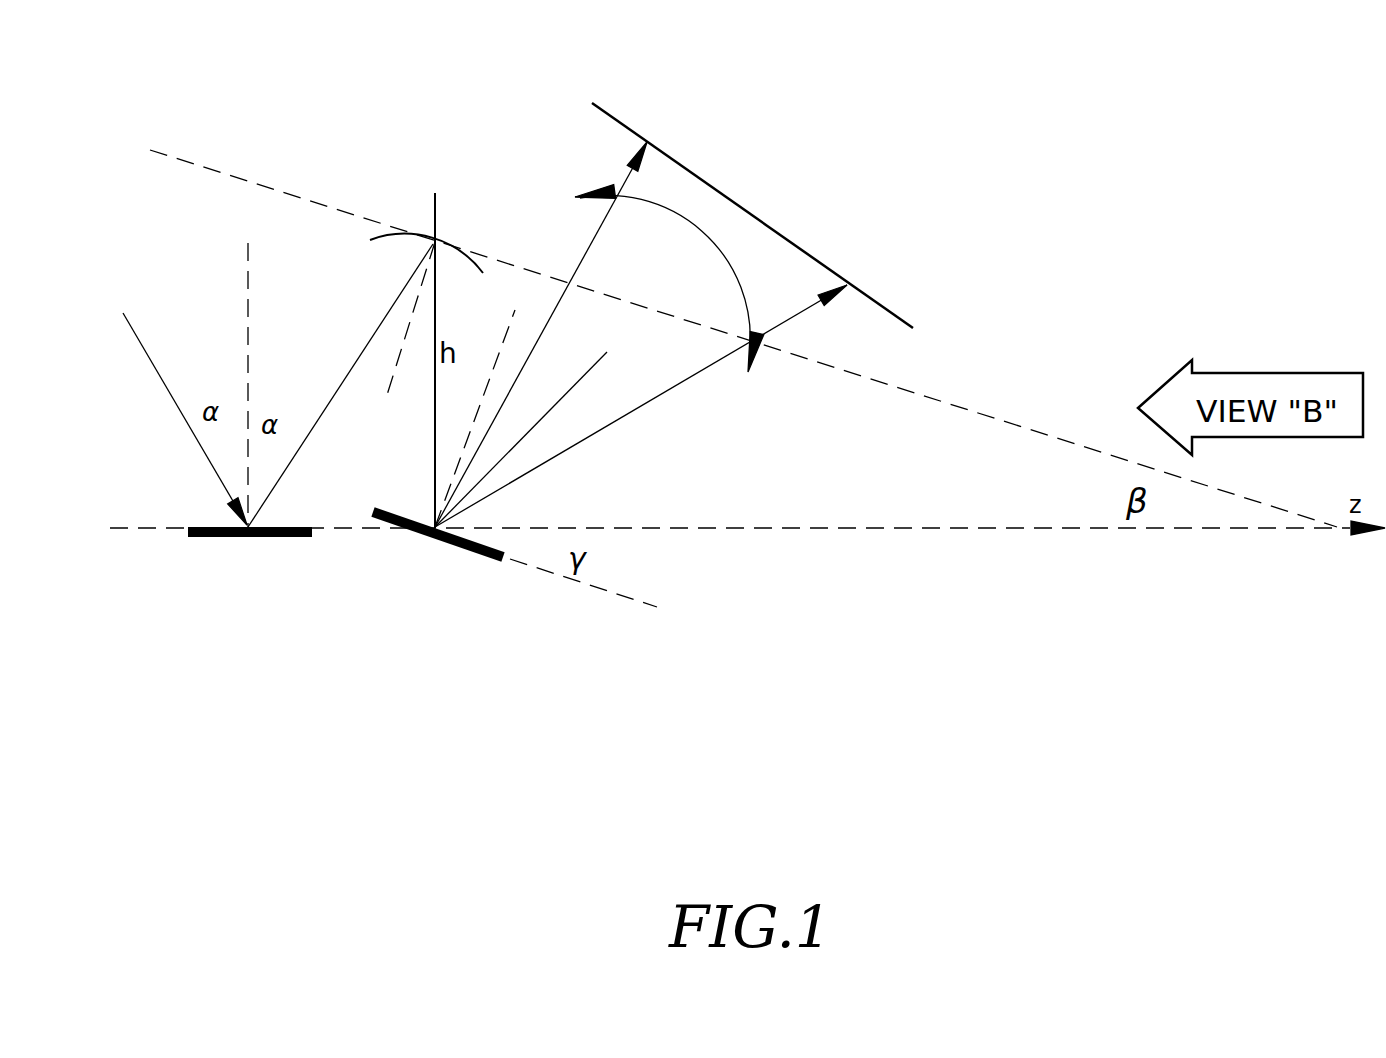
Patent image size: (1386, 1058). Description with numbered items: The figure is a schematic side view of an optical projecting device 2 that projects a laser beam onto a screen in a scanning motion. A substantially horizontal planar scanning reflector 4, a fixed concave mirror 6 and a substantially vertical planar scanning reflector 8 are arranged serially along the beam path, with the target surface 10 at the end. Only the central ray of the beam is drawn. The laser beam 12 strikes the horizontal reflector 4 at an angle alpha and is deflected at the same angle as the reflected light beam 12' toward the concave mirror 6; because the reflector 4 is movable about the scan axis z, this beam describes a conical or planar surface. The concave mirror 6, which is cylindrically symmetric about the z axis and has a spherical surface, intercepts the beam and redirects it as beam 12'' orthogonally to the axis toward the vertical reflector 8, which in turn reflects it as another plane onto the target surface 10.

The optical projecting device 2 is at (412, 160).
The horizontal planar scanning reflector 4 is at (280, 545).
The fixed concave mirror 6 is at (462, 250).
The vertical planar scanning reflector 8 is at (460, 552).
The target surface 10 is at (766, 205).
The laser beam 12 is at (158, 419).
The reflected light beam 12' is at (340, 385).
The redirected beam 12'' is at (593, 334).